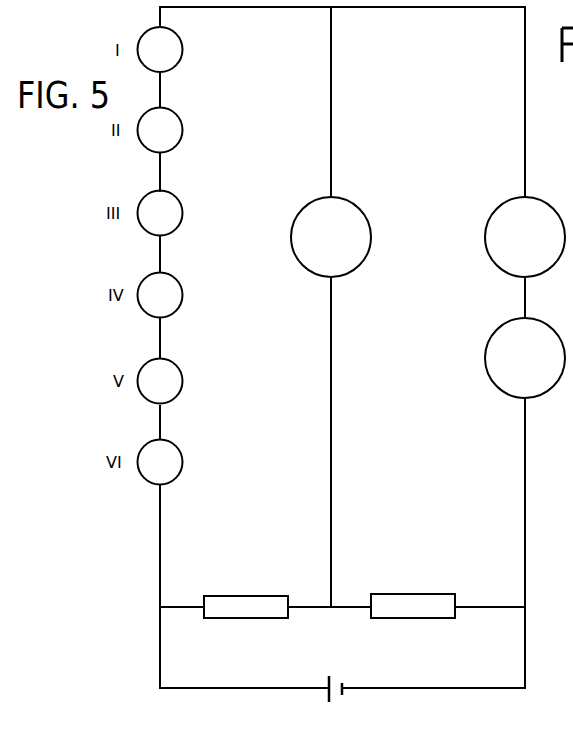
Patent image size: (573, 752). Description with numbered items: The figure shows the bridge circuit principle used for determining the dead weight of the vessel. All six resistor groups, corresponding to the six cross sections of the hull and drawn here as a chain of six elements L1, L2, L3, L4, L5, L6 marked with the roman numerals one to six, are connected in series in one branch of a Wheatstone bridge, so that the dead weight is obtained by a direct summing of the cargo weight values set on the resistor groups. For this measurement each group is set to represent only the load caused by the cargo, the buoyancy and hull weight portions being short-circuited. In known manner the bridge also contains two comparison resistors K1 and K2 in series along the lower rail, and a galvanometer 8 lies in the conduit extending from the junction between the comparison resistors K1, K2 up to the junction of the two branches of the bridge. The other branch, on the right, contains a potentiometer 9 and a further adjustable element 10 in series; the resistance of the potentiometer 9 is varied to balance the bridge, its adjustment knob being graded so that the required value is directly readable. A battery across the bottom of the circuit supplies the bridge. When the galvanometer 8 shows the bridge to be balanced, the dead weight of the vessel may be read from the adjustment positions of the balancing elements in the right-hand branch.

The galvanometer 8 is at (370, 241).
The potentiometer 9 is at (572, 232).
The meter 10 is at (548, 362).
The comparison resistor K1 is at (413, 606).
The comparison resistor K2 is at (246, 607).
The lamp L1 is at (160, 49).
The lamp L2 is at (160, 130).
The lamp L3 is at (160, 213).
The lamp L4 is at (160, 295).
The lamp L5 is at (160, 381).
The lamp L6 is at (160, 462).